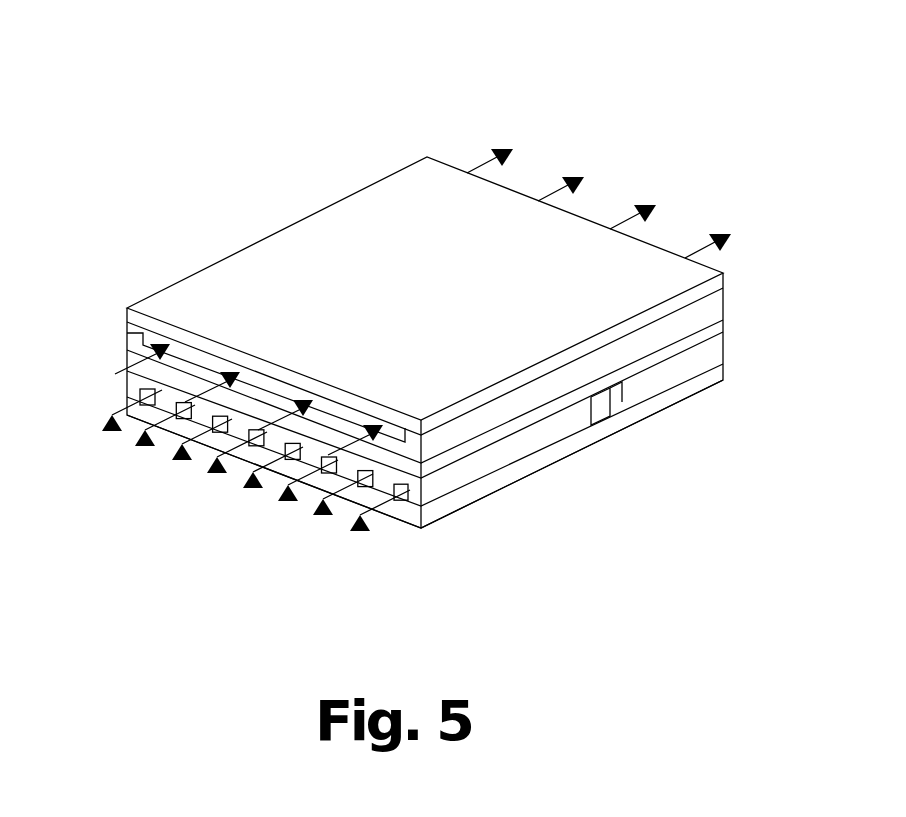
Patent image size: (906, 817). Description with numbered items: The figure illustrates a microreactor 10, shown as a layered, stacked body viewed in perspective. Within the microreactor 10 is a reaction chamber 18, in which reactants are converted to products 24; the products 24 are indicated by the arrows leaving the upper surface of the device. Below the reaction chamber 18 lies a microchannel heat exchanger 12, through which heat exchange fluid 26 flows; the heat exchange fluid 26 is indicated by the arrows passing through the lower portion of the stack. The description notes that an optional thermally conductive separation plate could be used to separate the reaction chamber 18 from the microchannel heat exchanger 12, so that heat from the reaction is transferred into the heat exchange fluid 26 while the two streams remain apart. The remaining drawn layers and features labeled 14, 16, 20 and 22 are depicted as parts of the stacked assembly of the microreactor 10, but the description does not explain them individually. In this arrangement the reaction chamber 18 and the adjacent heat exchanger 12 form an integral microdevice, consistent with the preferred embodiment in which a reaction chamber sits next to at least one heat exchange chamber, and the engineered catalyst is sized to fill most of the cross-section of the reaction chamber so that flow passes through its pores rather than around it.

The microreactor 10 is at (251, 114).
The microchannel heat exchanger 12 is at (480, 468).
The electrical connection tab 14 is at (603, 400).
The electrolyte layer 16 is at (713, 328).
The reaction chamber 18 is at (143, 340).
The top substrate 20 is at (325, 275).
The counter electrode layer 22 is at (550, 458).
The products 24 is at (655, 215).
The heat exchange fluid 26 is at (183, 462).